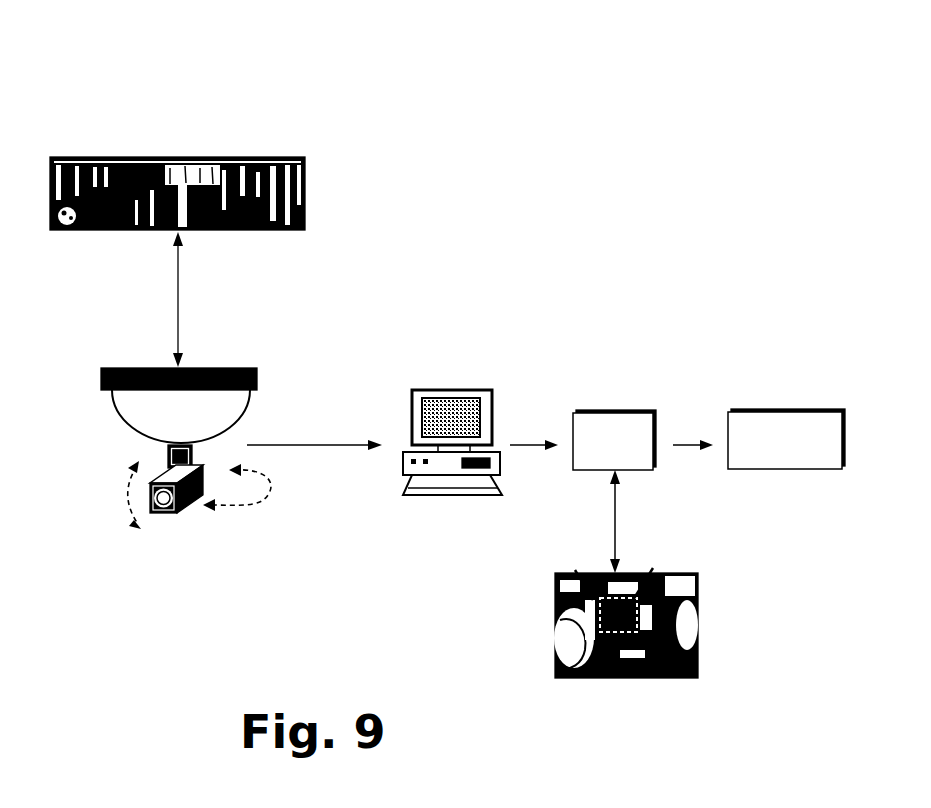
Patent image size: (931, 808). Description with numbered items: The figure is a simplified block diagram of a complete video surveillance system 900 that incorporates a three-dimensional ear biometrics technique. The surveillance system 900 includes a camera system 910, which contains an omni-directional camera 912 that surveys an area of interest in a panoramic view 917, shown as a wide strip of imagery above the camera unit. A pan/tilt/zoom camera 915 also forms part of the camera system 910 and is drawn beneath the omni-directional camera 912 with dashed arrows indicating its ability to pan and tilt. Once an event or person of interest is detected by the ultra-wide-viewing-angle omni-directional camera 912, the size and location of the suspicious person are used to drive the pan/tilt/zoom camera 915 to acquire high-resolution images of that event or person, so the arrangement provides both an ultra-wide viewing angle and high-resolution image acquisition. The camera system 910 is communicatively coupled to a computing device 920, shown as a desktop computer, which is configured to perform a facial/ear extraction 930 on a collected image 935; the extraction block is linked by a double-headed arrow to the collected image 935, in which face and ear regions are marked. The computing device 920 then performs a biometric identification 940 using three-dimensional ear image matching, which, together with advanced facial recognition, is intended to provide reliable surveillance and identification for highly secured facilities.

The surveillance system 900 is at (502, 86).
The panoramic view 917 is at (150, 157).
The camera system 910 is at (282, 398).
The omni-directional camera 912 is at (147, 412).
The pan/tilt/zoom camera 915 is at (172, 510).
The computing device 920 is at (448, 390).
The facial/ear extraction 930 is at (602, 413).
The biometrics identification module 940 is at (760, 412).
The collected image 935 is at (628, 679).